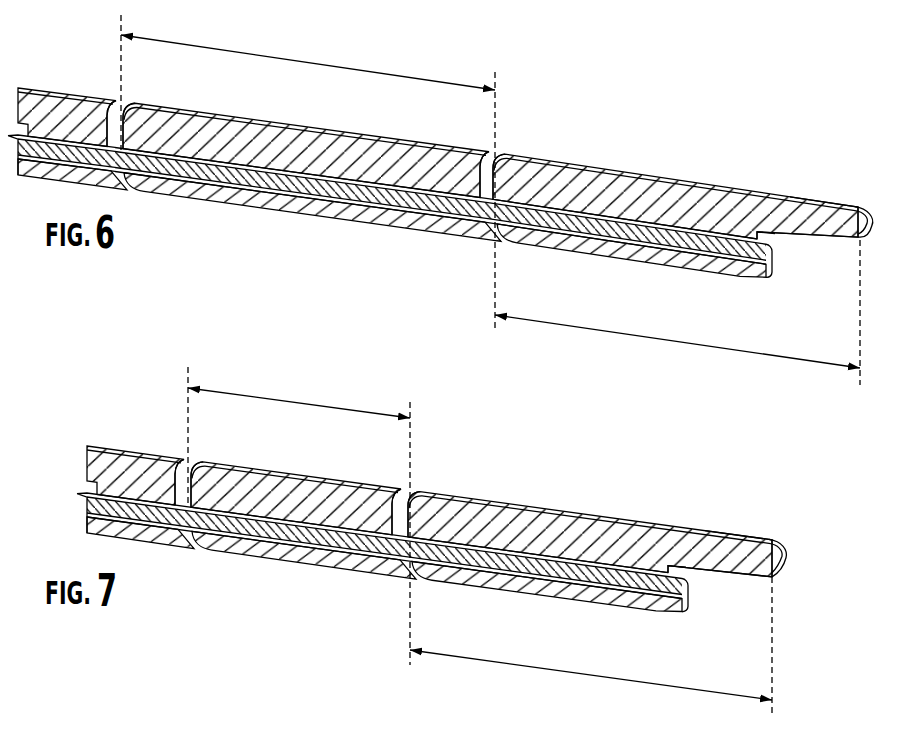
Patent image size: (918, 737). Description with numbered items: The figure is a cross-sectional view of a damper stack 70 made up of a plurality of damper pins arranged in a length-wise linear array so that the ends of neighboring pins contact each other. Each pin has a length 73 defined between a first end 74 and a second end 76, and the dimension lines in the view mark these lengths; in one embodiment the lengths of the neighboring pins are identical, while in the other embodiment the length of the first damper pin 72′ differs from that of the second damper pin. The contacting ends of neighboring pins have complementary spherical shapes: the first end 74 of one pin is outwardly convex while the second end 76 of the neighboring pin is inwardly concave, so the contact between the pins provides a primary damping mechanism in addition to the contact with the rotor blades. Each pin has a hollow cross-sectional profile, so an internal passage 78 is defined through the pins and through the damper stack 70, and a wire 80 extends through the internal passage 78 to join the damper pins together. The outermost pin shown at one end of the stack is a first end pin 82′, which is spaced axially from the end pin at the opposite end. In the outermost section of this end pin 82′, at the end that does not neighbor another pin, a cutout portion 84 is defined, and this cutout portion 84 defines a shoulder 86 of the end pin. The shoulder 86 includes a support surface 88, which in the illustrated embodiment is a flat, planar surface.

In FIG. 6, the damper stack 70 is at (542, 72).
In FIG. 7, the damper stack 70 is at (455, 420).
In FIG. 6, the first damper pin 72′ is at (660, 160).
In FIG. 7, the first damper pin 72′ is at (576, 504).
In FIG. 6, the first end pin 82′ is at (392, 199).
In FIG. 7, the first end pin 82′ is at (384, 546).
In FIG. 6, the length 73 is at (297, 60).
In FIG. 7, the length 73 is at (307, 404).
In FIG. 6, the first end 74 is at (142, 102).
In FIG. 7, the first end 74 is at (207, 465).
In FIG. 6, the second end 76 is at (492, 150).
In FIG. 7, the second end 76 is at (409, 492).
In FIG. 6, the internal passage 78 is at (660, 258).
In FIG. 7, the internal passage 78 is at (574, 588).
In FIG. 6, the wire 80 is at (772, 250).
In FIG. 7, the wire 80 is at (687, 588).
In FIG. 6, the cutout portion 84 is at (793, 258).
In FIG. 7, the cutout portion 84 is at (710, 597).
In FIG. 6, the shoulder 86 is at (803, 213).
In FIG. 7, the shoulder 86 is at (717, 548).
In FIG. 6, the support surface 88 is at (819, 240).
In FIG. 7, the support surface 88 is at (730, 574).